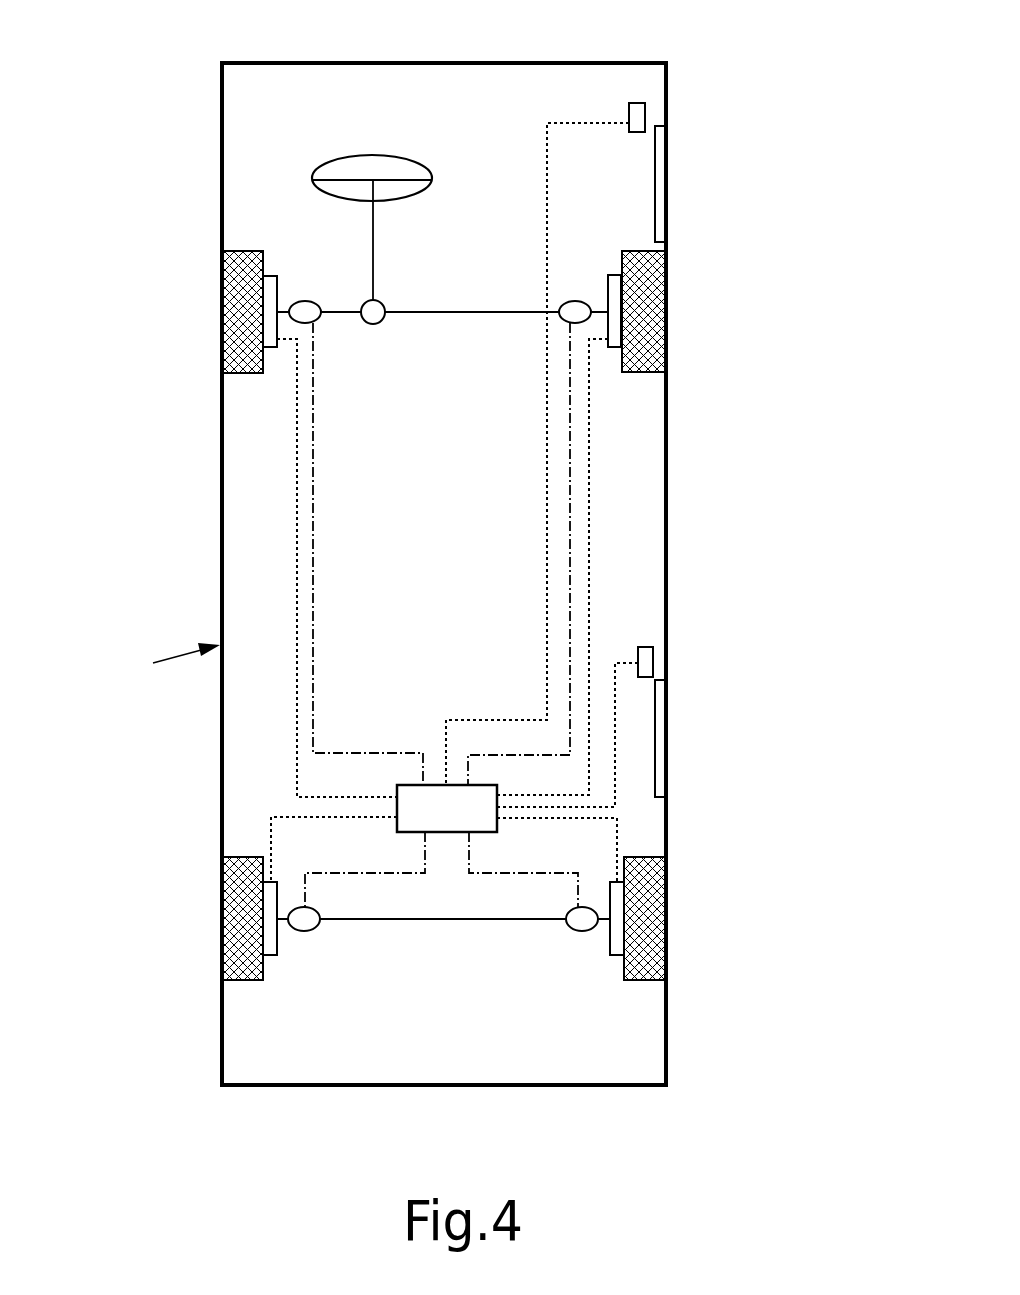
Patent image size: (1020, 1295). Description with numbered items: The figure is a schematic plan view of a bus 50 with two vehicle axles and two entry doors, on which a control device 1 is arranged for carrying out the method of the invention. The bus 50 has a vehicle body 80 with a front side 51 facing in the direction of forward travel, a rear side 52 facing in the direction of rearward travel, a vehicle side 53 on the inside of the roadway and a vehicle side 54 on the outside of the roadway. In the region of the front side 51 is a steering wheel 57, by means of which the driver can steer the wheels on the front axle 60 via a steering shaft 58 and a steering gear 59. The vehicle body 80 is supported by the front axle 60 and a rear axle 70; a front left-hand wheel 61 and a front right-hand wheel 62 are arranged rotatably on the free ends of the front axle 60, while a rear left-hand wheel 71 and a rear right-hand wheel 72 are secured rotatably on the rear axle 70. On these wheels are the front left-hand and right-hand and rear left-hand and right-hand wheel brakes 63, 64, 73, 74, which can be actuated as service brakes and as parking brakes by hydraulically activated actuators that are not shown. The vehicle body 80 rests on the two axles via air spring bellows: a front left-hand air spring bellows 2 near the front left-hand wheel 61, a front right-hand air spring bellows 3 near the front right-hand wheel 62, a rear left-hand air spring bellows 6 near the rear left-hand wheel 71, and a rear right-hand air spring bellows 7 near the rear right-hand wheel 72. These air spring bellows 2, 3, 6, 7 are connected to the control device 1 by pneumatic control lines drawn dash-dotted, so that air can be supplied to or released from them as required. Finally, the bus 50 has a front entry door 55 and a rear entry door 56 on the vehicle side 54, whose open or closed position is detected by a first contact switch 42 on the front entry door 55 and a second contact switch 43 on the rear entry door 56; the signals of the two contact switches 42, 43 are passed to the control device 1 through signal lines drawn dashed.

The control device 1 is at (447, 808).
The front left-hand air spring bellows 2 is at (305, 301).
The front right-hand air spring bellows 3 is at (575, 301).
The rear left-hand air spring bellows 6 is at (316, 930).
The rear right-hand air spring bellows 7 is at (570, 930).
The first contact switch 42 is at (637, 112).
The second contact switch 43 is at (646, 662).
The bus 50 is at (162, 140).
The front side 51 is at (453, 63).
The rear side 52 is at (582, 1086).
The vehicle side on the inside of the roadway 53 is at (222, 519).
The vehicle side on the outside of the roadway 54 is at (666, 530).
The front entry door 55 is at (662, 178).
The rear entry door 56 is at (662, 733).
The steering wheel 57 is at (433, 183).
The steering shaft 58 is at (375, 235).
The steering gear 59 is at (382, 303).
The front axle 60 is at (348, 312).
The front left-hand wheel 61 is at (223, 313).
The front right-hand wheel 62 is at (666, 315).
The front left-hand wheel brake 63 is at (270, 347).
The front right-hand wheel brake 64 is at (617, 347).
The rear axle 70 is at (453, 920).
The rear left-hand wheel 71 is at (223, 920).
The rear right-hand wheel 72 is at (666, 920).
The rear left-hand wheel brake 73 is at (271, 955).
The rear right-hand wheel brake 74 is at (617, 955).
The vehicle body 80 is at (167, 664).